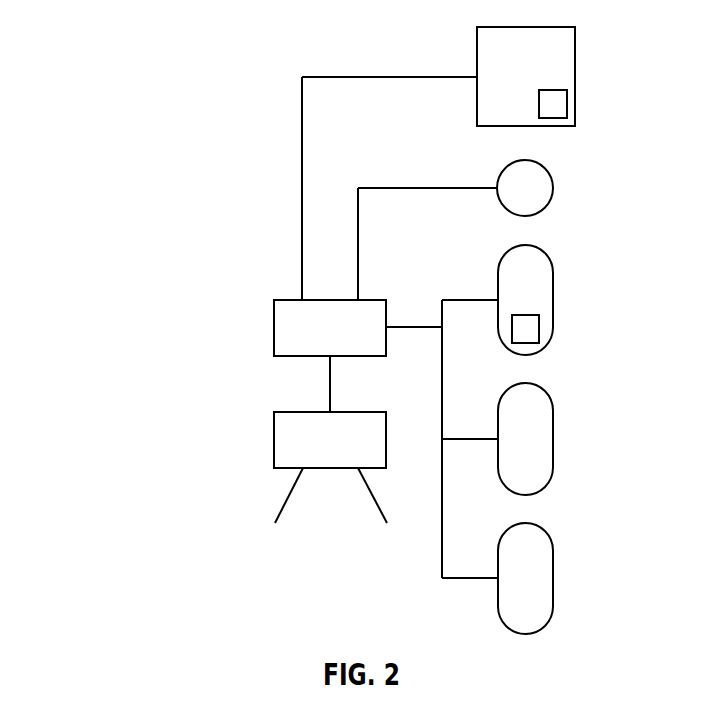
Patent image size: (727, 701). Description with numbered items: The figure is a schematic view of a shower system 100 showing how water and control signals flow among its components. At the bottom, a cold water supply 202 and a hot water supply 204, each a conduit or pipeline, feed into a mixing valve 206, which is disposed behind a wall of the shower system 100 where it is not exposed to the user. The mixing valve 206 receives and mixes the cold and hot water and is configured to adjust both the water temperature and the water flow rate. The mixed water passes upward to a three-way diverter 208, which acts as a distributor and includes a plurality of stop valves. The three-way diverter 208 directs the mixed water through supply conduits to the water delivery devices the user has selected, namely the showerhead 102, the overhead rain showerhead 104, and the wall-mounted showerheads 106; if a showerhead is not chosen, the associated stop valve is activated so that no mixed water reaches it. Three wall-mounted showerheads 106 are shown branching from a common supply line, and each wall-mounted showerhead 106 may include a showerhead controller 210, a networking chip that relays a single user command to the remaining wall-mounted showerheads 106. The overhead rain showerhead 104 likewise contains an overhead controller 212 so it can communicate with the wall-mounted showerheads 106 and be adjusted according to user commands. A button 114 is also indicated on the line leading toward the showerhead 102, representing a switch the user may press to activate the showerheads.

The shower system 100 is at (134, 46).
The showerhead 102 is at (554, 188).
The overhead rain showerhead 104 is at (476, 52).
The wall-mounted showerhead 106 is at (555, 272).
The button 114 is at (356, 236).
The cold water supply 202 is at (282, 510).
The hot water supply 204 is at (380, 512).
The mixing valve 206 is at (274, 440).
The three-way diverter 208 is at (274, 327).
The showerhead controller 210 is at (541, 327).
The overhead controller 212 is at (569, 104).